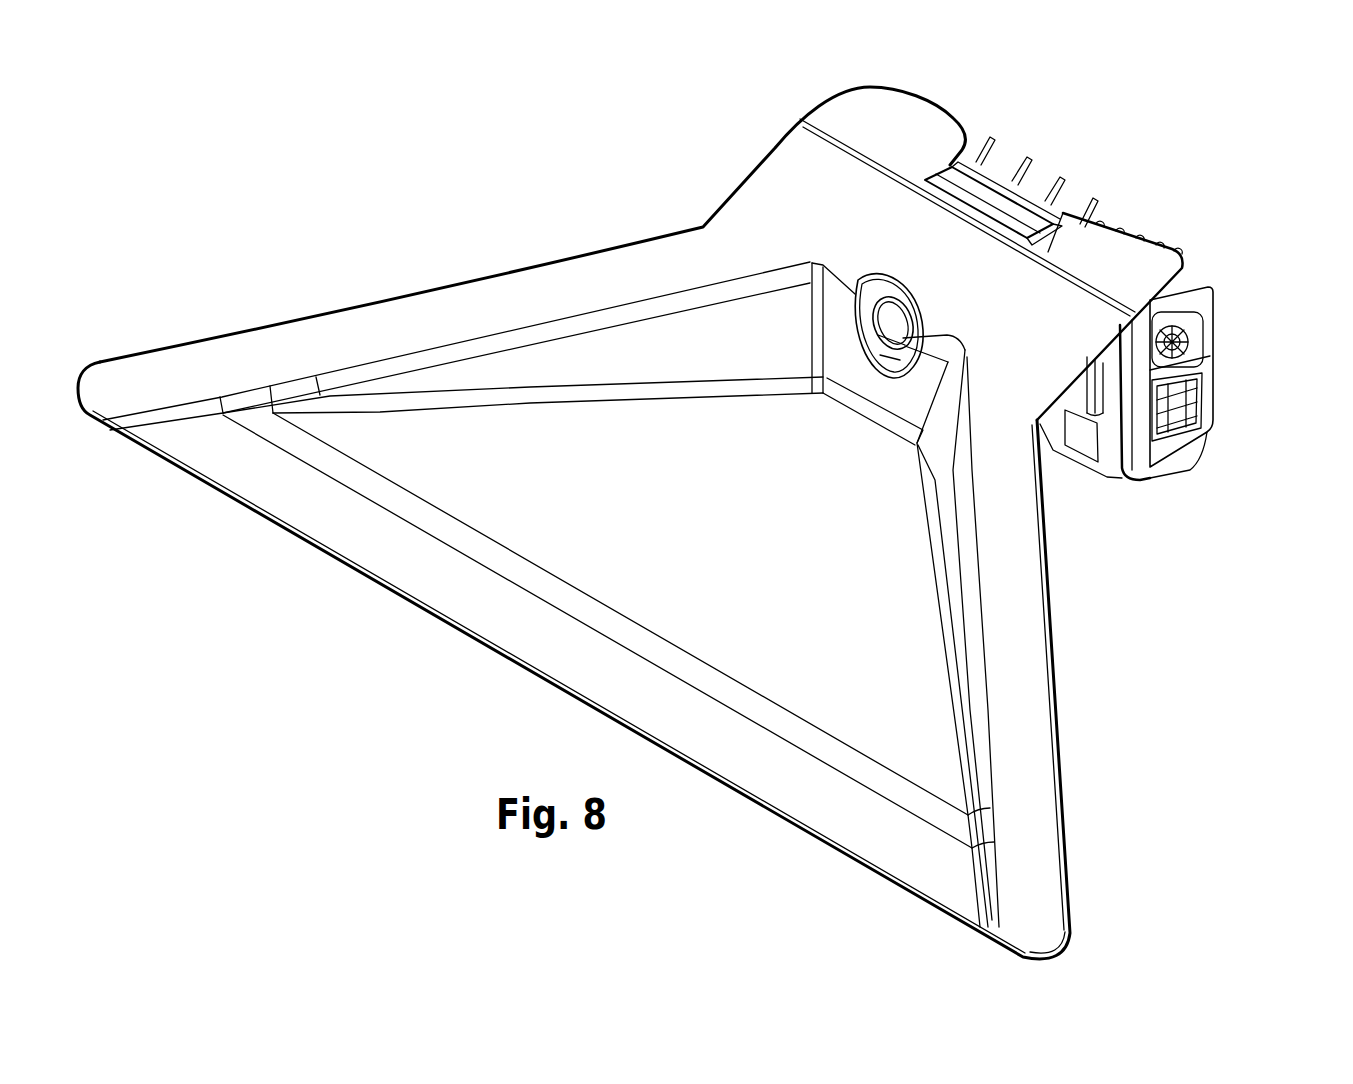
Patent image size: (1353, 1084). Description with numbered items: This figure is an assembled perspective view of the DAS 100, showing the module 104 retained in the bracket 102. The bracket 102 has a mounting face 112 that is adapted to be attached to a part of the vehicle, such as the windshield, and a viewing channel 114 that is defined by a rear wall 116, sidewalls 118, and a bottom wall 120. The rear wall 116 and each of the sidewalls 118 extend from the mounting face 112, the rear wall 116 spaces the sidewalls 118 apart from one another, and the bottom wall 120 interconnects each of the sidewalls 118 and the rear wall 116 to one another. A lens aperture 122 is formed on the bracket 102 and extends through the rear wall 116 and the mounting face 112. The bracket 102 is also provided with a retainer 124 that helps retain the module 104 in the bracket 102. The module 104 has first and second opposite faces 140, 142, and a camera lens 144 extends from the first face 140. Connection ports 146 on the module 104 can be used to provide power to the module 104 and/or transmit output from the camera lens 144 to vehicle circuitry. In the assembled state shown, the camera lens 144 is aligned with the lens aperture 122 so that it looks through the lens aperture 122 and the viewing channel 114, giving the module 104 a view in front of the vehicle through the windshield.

The DAS 100 is at (700, 499).
The bracket 102 is at (420, 205).
The module 104 is at (1181, 420).
The mounting face 112 is at (1006, 366).
The viewing channel 114 is at (630, 268).
The rear wall 116 is at (882, 388).
The sidewalls 118 is at (625, 357).
The bottom wall 120 is at (780, 677).
The lens aperture 122 is at (794, 228).
The retainer 124 is at (1030, 175).
The first face 140 is at (1062, 488).
The second face 142 is at (1166, 200).
The camera lens 144 is at (890, 313).
The connection ports 146 is at (1187, 328).